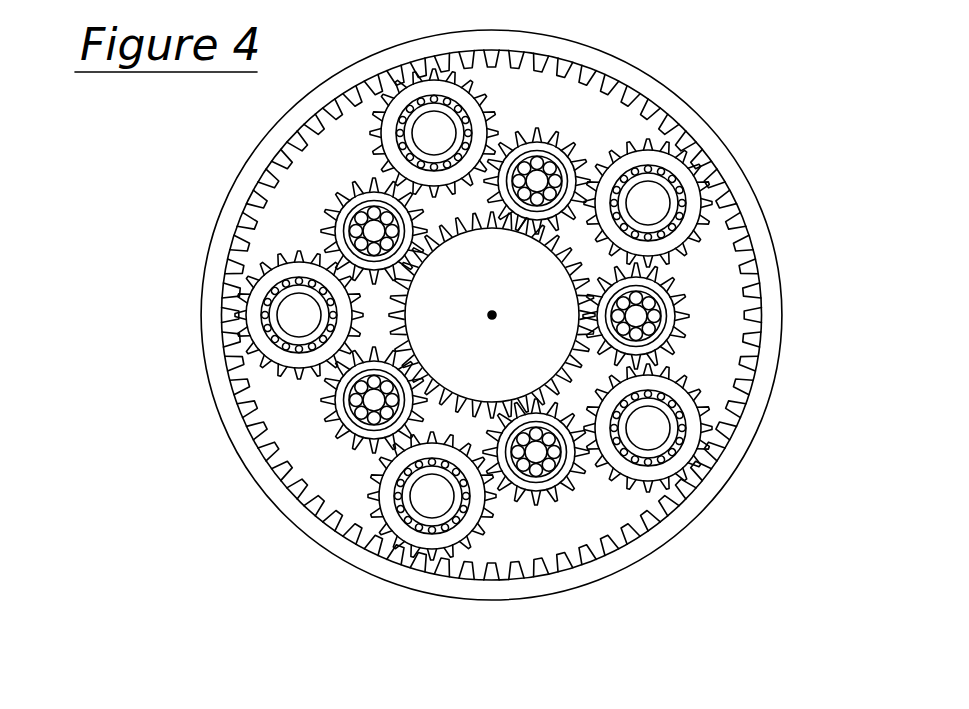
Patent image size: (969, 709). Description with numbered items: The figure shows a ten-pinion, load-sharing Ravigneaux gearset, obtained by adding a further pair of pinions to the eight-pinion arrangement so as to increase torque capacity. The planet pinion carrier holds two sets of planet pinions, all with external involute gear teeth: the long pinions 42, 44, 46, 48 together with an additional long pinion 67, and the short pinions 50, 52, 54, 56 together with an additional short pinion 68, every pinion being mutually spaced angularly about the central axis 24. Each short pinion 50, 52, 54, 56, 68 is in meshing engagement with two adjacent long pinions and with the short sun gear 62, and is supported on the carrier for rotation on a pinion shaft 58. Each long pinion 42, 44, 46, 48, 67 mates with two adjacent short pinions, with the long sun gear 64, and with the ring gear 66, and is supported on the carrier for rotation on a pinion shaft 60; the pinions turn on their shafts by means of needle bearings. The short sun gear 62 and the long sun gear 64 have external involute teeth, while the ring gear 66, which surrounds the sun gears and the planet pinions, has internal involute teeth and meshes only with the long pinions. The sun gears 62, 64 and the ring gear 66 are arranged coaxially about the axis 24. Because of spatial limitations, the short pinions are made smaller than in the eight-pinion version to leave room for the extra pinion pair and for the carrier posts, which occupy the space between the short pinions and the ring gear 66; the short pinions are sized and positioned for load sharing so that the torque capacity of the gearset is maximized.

The central axis 24 is at (492, 316).
The long pinion 42 is at (680, 172).
The long pinion 44 is at (683, 453).
The long pinion 46 is at (413, 537).
The long pinion 48 is at (257, 322).
The short pinion 50 is at (337, 213).
The short pinion 52 is at (662, 293).
The short pinion 54 is at (532, 488).
The short pinion 56 is at (353, 432).
The pinion shaft 58 is at (633, 316).
The pinion shaft 60 is at (647, 205).
The short sun gear 62 is at (474, 285).
The long sun gear 64 is at (353, 335).
The ring gear 66 is at (753, 207).
The planet gear 67 is at (405, 100).
The idler gear 68 is at (547, 147).